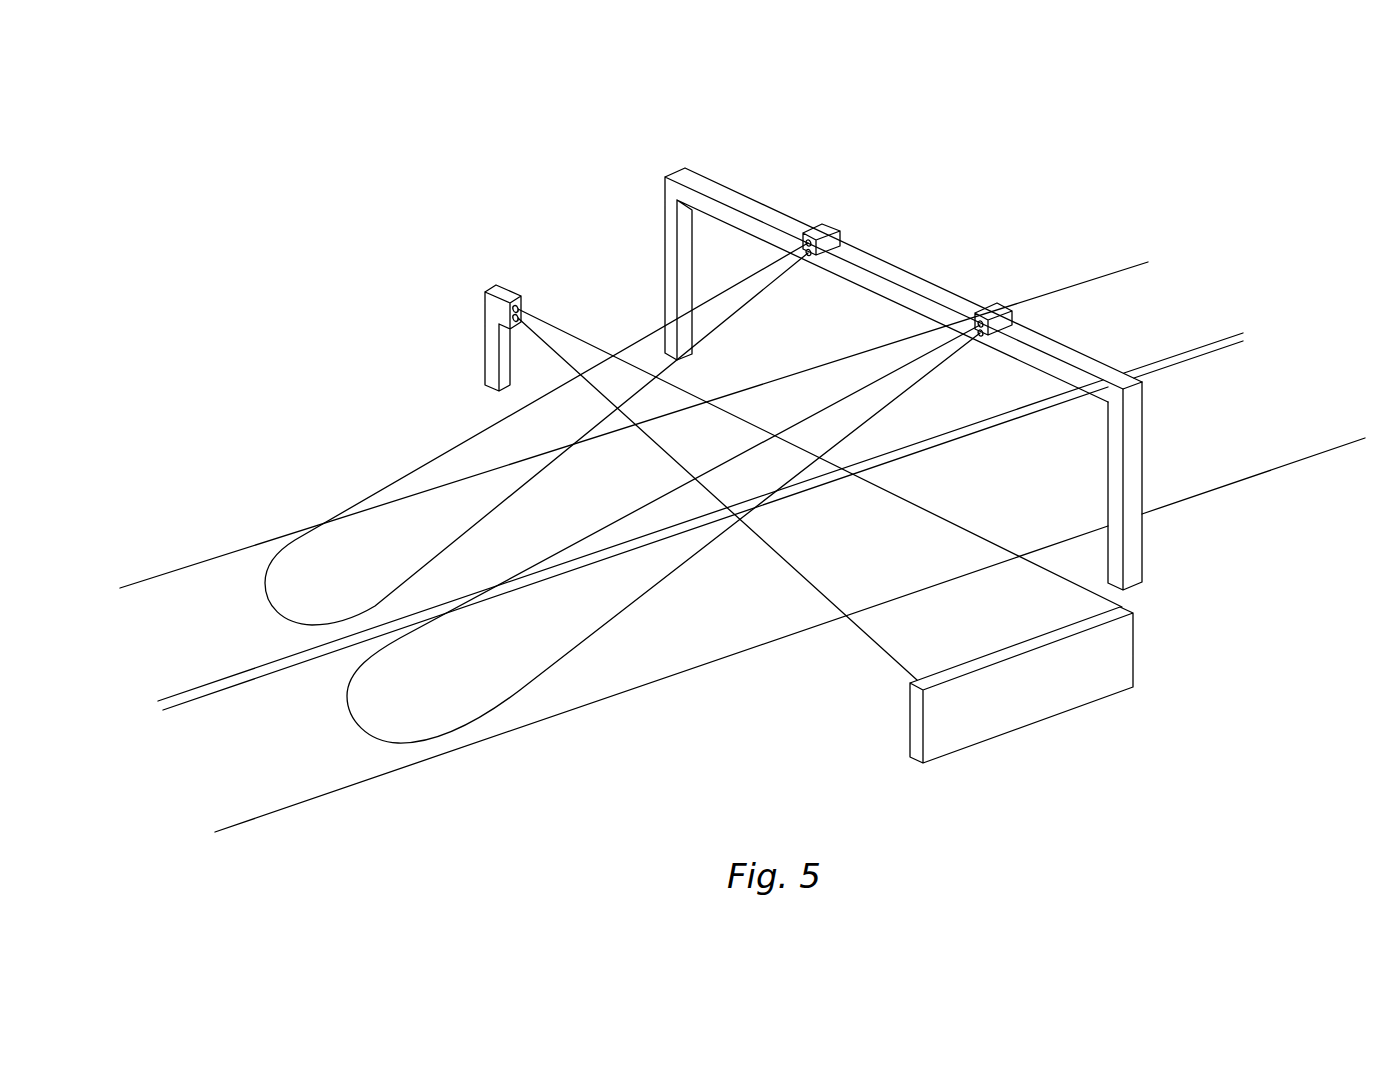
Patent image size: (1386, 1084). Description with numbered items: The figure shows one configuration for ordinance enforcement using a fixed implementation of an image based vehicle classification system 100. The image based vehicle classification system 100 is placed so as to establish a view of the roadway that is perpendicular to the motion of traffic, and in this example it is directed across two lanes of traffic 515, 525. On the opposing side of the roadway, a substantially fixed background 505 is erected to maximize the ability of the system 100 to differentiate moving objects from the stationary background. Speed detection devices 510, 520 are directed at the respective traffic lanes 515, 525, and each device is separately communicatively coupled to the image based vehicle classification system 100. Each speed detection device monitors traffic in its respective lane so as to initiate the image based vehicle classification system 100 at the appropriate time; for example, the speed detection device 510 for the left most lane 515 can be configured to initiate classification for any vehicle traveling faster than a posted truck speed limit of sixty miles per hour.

The image based vehicle classification system 100 is at (521, 295).
The substantially fixed background 505 is at (1049, 699).
The speed detection device 510 is at (823, 223).
The left most lane 515 is at (221, 641).
The speed detection device 520 is at (1013, 318).
The lane of traffic 525 is at (287, 756).